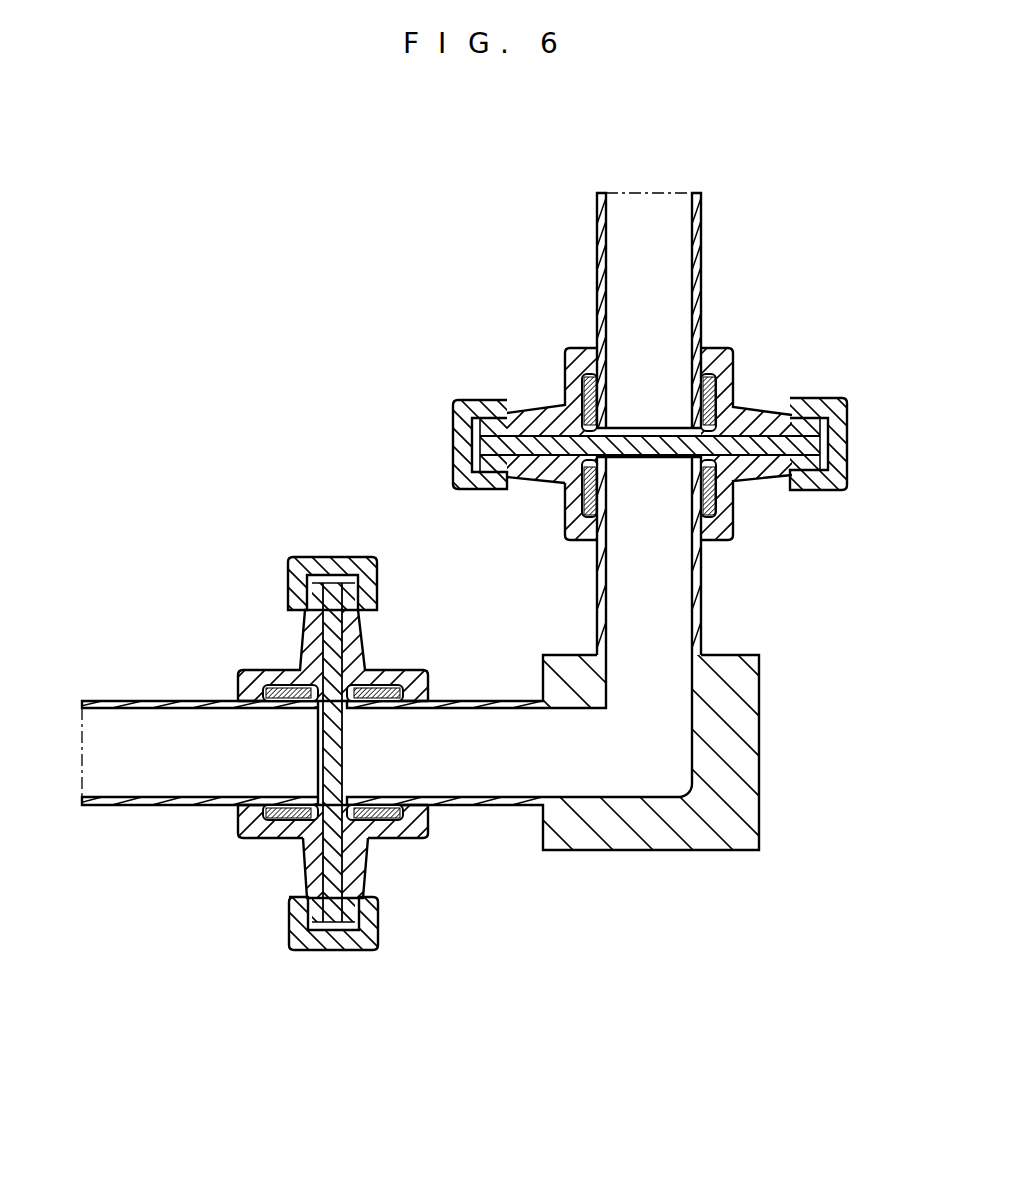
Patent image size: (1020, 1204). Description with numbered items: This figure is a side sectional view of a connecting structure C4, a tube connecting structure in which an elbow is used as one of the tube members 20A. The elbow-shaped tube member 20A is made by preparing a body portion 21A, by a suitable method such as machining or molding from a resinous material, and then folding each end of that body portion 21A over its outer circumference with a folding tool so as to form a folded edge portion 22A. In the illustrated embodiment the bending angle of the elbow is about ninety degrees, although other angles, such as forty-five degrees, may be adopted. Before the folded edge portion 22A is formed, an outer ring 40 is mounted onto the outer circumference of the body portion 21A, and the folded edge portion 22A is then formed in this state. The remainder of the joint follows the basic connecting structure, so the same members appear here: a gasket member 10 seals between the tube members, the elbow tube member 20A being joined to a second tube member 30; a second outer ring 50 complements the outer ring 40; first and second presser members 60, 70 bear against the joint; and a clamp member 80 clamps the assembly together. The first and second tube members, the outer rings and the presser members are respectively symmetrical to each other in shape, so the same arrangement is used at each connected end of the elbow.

The gasket member 10 is at (932, 493).
The tube member 20A is at (710, 850).
The body portion 21A is at (703, 598).
The folded edge portion 22A is at (567, 493).
The second tube member 30 is at (597, 270).
The first outer ring 40 is at (568, 525).
The second outer ring 50 is at (790, 329).
The first presser member 60 is at (727, 517).
The second presser member 70 is at (565, 365).
The clamp member 80 is at (453, 430).
The connecting structure C4 is at (337, 458).